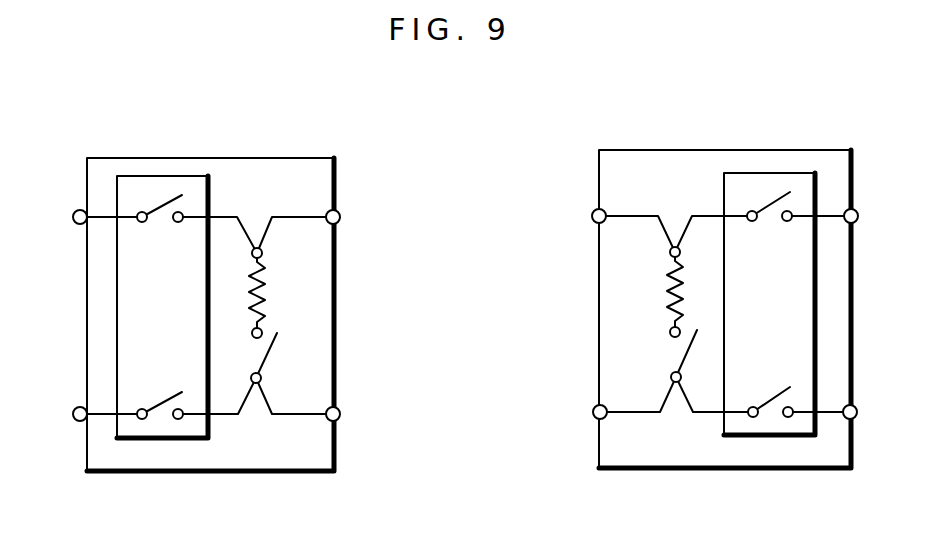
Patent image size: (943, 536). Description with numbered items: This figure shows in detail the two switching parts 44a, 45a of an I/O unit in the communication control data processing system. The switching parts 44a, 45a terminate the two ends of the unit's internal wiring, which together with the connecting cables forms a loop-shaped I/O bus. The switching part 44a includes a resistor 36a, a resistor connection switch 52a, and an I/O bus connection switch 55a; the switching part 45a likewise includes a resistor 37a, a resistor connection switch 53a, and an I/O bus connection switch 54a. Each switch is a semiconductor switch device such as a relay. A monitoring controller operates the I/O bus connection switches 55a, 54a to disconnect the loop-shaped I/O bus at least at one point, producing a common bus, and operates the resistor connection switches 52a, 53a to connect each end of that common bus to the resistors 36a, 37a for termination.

The switching part 44a is at (248, 307).
The switching part 45a is at (684, 305).
The resistor 36a is at (336, 293).
The resistor 37a is at (596, 292).
The resistor connection switch 52a is at (337, 358).
The resistor connection switch 53a is at (603, 356).
The I/O bus connection switch 55a is at (162, 352).
The I/O bus connection switch 54a is at (769, 349).